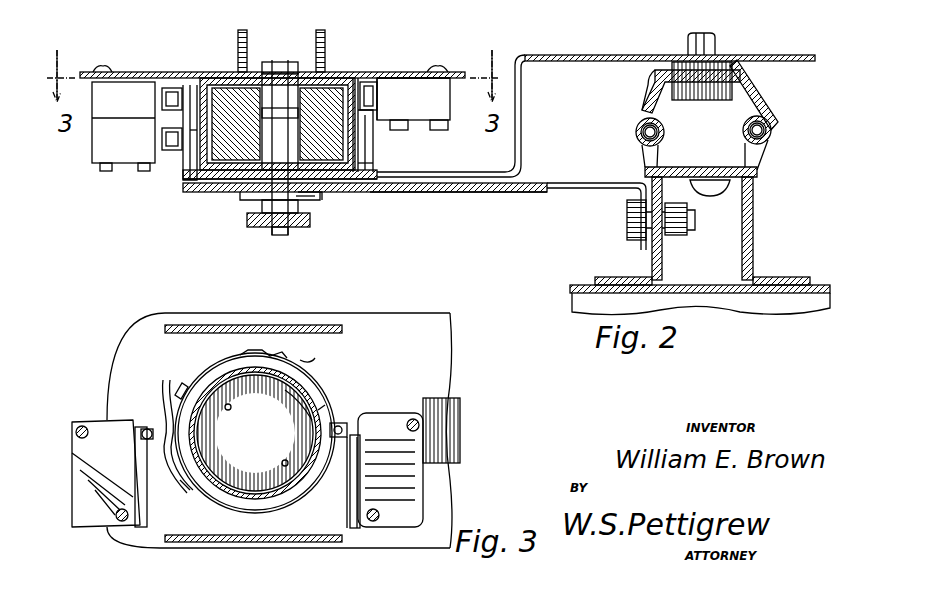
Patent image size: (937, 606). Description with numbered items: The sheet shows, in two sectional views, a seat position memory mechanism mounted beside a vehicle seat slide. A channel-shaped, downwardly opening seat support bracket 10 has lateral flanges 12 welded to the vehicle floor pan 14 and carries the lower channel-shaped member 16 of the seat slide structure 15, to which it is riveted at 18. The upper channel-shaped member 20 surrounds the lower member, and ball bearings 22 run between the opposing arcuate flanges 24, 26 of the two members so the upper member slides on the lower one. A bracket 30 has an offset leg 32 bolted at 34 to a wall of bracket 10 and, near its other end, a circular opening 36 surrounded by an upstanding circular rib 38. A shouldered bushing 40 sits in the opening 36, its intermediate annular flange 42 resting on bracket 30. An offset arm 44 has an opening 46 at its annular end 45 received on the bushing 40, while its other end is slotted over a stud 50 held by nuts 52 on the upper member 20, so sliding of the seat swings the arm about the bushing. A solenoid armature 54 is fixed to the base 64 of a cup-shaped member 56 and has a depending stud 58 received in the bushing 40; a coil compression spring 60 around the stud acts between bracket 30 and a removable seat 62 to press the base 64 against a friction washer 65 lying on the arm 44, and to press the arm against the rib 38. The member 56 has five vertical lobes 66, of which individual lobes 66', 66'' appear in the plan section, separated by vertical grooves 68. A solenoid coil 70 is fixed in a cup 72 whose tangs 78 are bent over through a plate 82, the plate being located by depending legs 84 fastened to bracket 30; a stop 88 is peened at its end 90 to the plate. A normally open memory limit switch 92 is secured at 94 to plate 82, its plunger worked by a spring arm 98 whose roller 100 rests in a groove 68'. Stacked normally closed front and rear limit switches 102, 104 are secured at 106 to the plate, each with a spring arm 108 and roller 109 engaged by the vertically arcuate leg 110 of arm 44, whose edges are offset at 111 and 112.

In FIG. 2, the seat support bracket 10 is at (764, 210).
In FIG. 2, the lateral extending flanges 12 is at (605, 278).
In FIG. 2, the vehicle floor pan 14 is at (735, 293).
In FIG. 2, the seat slide structure 15 is at (772, 95).
In FIG. 2, the lower channel-shaped member 16 is at (762, 170).
In FIG. 2, the rivet connection 18 is at (716, 194).
In FIG. 2, the upper channel-shaped member 20 is at (648, 97).
In FIG. 2, the ball bearings 22 is at (645, 140).
In FIG. 2, the arcuate flanges 24 is at (742, 131).
In FIG. 2, the arcuate flanges 26 is at (640, 131).
In FIG. 2, the bracket 30 is at (548, 186).
In FIG. 3, the bracket 30 is at (430, 313).
In FIG. 2, the offset leg 32 is at (632, 237).
In FIG. 2, the bolt connection 34 is at (683, 236).
In FIG. 2, the circular opening 36 is at (250, 192).
In FIG. 2, the circular rib 38 is at (372, 190).
In FIG. 2, the shouldered bushing 40 is at (305, 196).
In FIG. 2, the intermediate annular flange 42 is at (245, 192).
In FIG. 2, the offset arm 44 is at (562, 52).
In FIG. 3, the offset arm 44 is at (440, 398).
In FIG. 3, the annularly shaped one end 45 is at (276, 355).
In FIG. 2, the opening 46 is at (315, 183).
In FIG. 2, the stud 50 is at (688, 45).
In FIG. 2, the nuts 52 is at (750, 62).
In FIG. 2, the solenoid armature 54 is at (284, 78).
In FIG. 2, the cup-shaped member 56 is at (356, 80).
In FIG. 3, the cup-shaped member 56 is at (232, 352).
In FIG. 2, the depending stud 58 is at (278, 233).
In FIG. 2, the coil compression spring 60 is at (262, 224).
In FIG. 2, the removable seat 62 is at (294, 226).
In FIG. 2, the base 64 is at (215, 180).
In FIG. 2, the friction washer 65 is at (360, 163).
In FIG. 3, the vertically extending lobes 66 is at (255, 427).
In FIG. 3, the ring bracket 66' is at (373, 476).
In FIG. 3, the ring portion 66'' is at (343, 345).
In FIG. 2, the vertical grooves 68 is at (388, 141).
In FIG. 3, the vertical grooves 68 is at (255, 433).
In FIG. 3, the groove 68' is at (346, 389).
In FIG. 2, the solenoid coil 70 is at (262, 88).
In FIG. 3, the solenoid coil 70 is at (300, 385).
In FIG. 2, the cup 72 is at (207, 85).
In FIG. 3, the cup 72 is at (262, 368).
In FIG. 2, the tangs 78 is at (243, 60).
In FIG. 2, the plate 82 is at (405, 72).
In FIG. 3, the plate 82 is at (180, 325).
In FIG. 2, the depending legs 84 is at (400, 172).
In FIG. 3, the depending legs 84 is at (345, 325).
In FIG. 2, the stop 88 is at (319, 60).
In FIG. 3, the stop 88 is at (246, 446).
In FIG. 2, the one end 90 is at (276, 72).
In FIG. 2, the memory limit switch 92 is at (420, 90).
In FIG. 3, the memory limit switch 92 is at (423, 470).
In FIG. 2, the securing point 94 is at (440, 68).
In FIG. 3, the securing point 94 is at (420, 425).
In FIG. 2, the spring arm 98 is at (400, 122).
In FIG. 3, the spring arm 98 is at (352, 500).
In FIG. 2, the roller 100 is at (368, 85).
In FIG. 3, the roller 100 is at (345, 425).
In FIG. 2, the front limit switch 102 is at (122, 95).
In FIG. 3, the front limit switch 102 is at (112, 420).
In FIG. 2, the rear limit switch 104 is at (100, 140).
In FIG. 2, the securing point 106 is at (103, 66).
In FIG. 3, the securing point 106 is at (82, 426).
In FIG. 2, the spring arm 108 is at (172, 88).
In FIG. 3, the spring arm 108 is at (145, 505).
In FIG. 2, the roller 109 is at (162, 128).
In FIG. 3, the roller 109 is at (147, 428).
In FIG. 2, the vertically arcuate leg 110 is at (187, 178).
In FIG. 3, the vertically arcuate leg 110 is at (190, 440).
In FIG. 2, the offset 111 is at (190, 150).
In FIG. 3, the offset 111 is at (178, 385).
In FIG. 3, the offset 112 is at (185, 485).